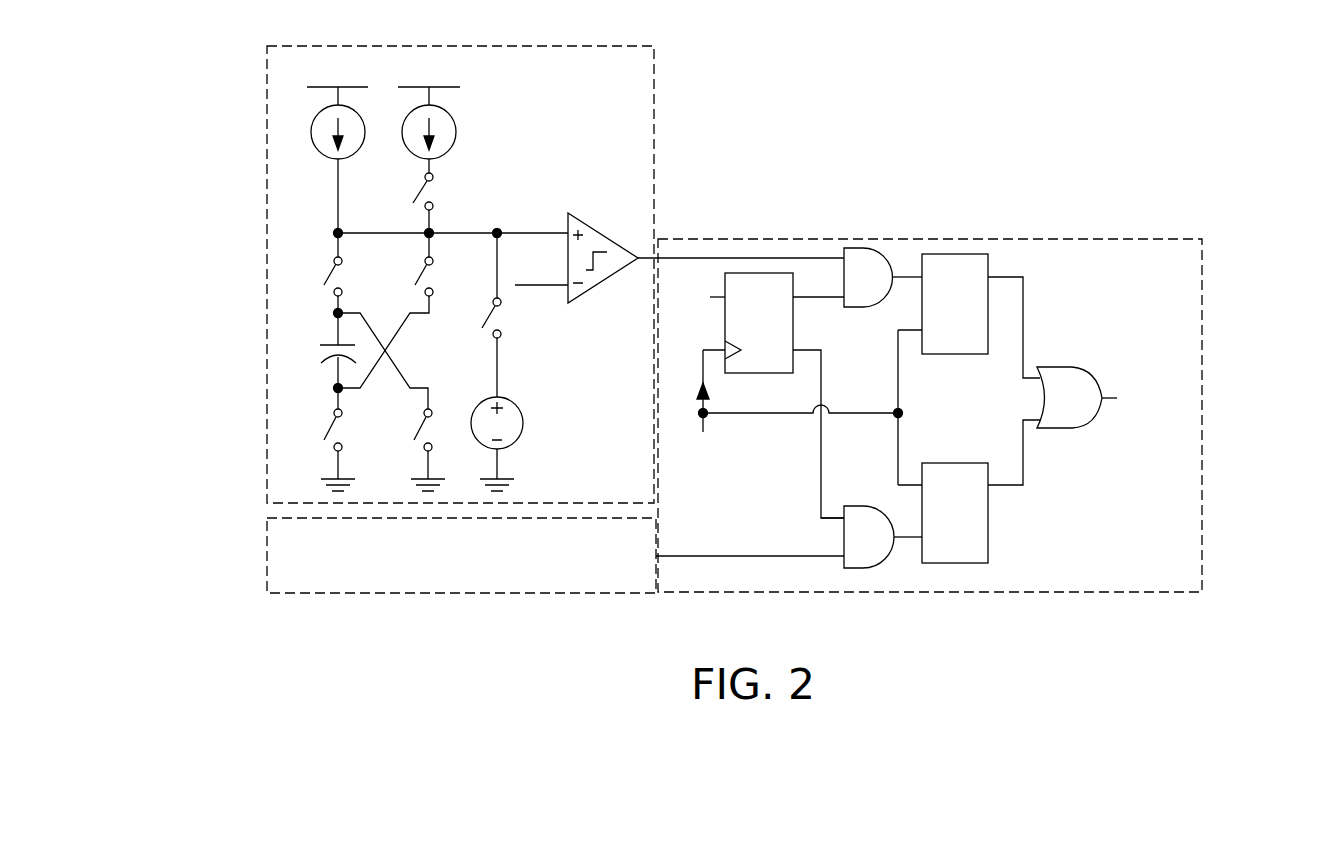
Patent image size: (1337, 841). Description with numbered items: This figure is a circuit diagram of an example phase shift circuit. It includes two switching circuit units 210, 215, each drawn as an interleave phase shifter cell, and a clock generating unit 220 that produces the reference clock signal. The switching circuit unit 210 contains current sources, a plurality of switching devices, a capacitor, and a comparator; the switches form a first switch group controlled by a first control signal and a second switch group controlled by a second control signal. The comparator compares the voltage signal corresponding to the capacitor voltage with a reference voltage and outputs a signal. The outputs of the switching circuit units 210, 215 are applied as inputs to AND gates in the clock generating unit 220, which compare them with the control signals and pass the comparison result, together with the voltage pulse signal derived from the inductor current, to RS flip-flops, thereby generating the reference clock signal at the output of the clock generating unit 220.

The switching circuit unit 210 is at (266, 352).
The switching circuit unit 215 is at (266, 556).
The clock generating unit 220 is at (1202, 333).